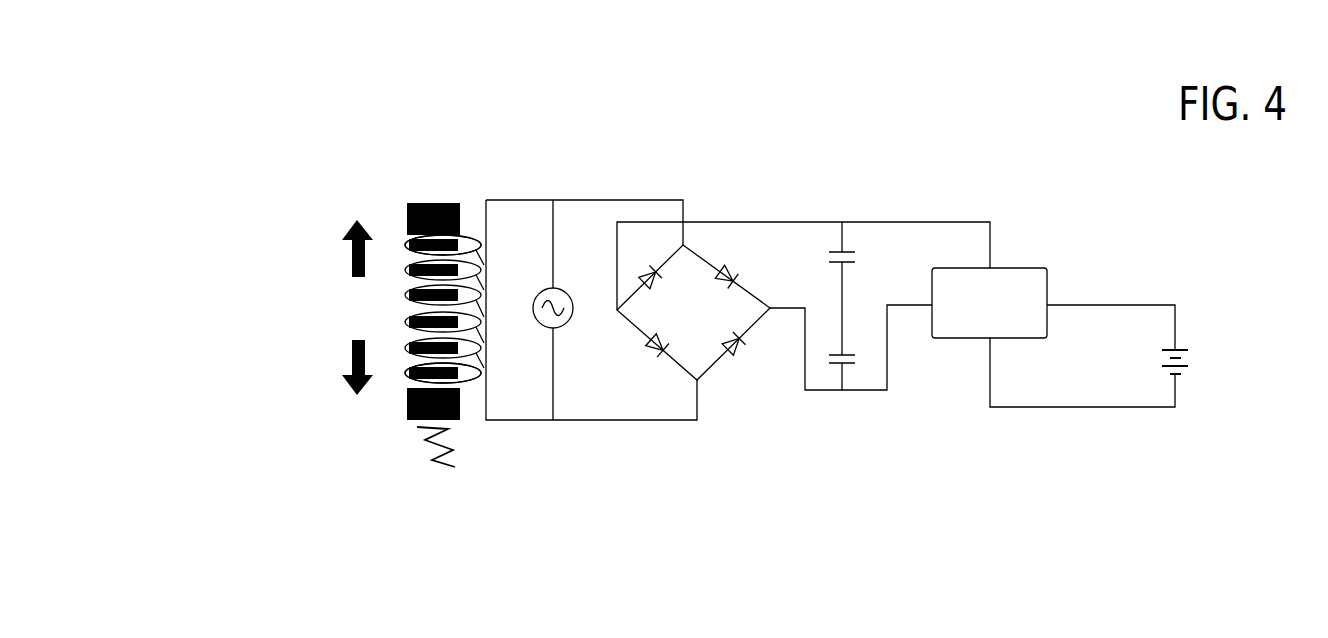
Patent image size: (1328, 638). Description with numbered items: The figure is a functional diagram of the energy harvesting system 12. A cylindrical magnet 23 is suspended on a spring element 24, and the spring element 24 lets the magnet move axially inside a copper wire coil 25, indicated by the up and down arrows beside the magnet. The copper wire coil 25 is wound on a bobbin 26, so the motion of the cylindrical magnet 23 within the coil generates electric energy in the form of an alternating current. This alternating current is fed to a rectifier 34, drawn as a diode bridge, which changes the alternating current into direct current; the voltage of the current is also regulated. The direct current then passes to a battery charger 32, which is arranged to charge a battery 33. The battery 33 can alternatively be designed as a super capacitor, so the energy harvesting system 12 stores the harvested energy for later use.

The energy harvesting system 12 is at (785, 142).
The cylindrical magnet 23 is at (440, 176).
The spring element 24 is at (372, 448).
The copper wire coil 25 is at (468, 375).
The bobbin 26 is at (473, 527).
The battery charger 32 is at (1007, 318).
The battery 33 is at (1225, 355).
The rectifier 34 is at (704, 258).